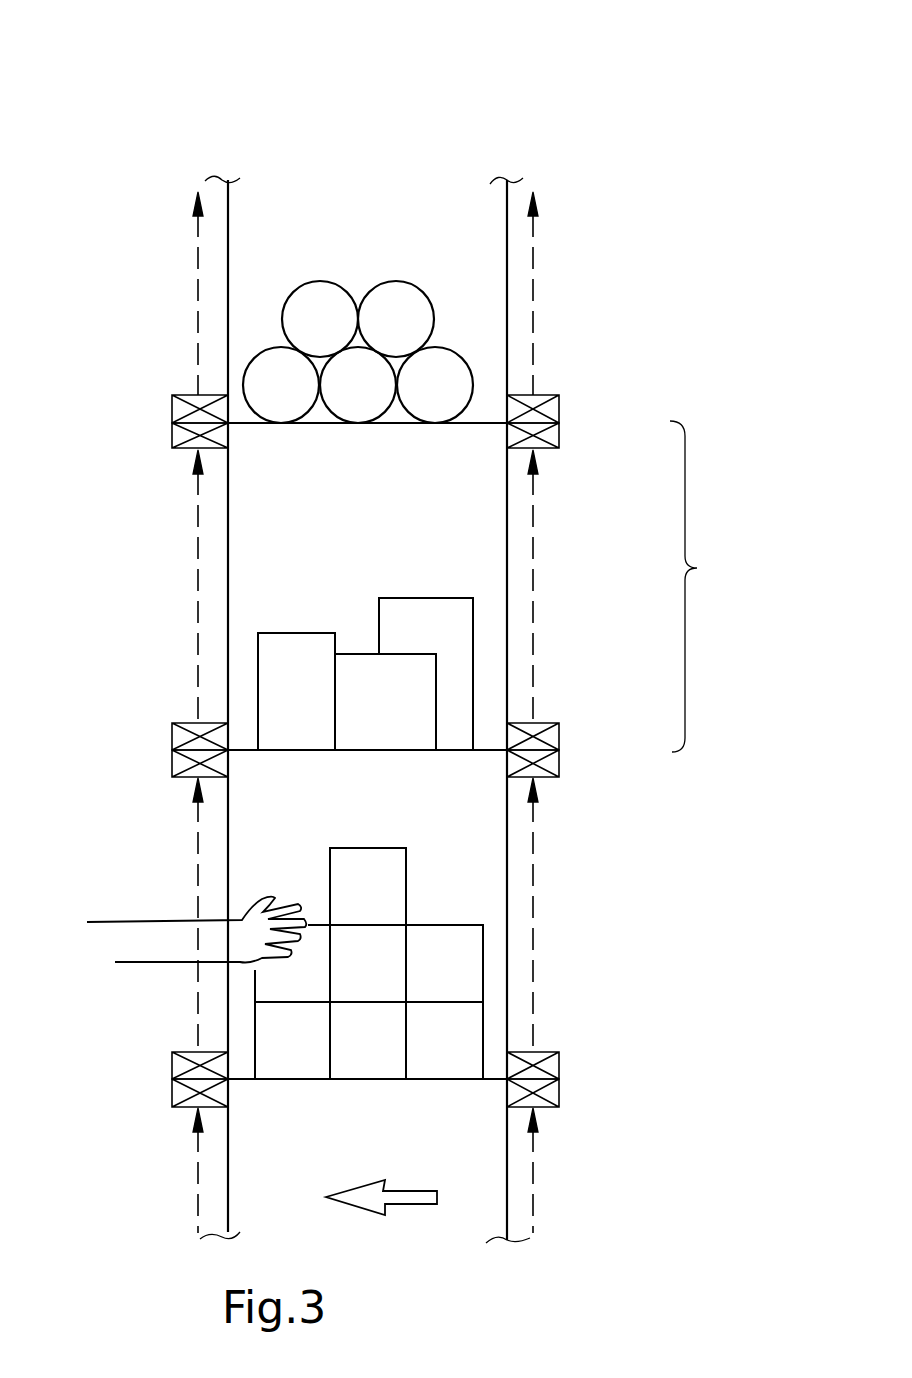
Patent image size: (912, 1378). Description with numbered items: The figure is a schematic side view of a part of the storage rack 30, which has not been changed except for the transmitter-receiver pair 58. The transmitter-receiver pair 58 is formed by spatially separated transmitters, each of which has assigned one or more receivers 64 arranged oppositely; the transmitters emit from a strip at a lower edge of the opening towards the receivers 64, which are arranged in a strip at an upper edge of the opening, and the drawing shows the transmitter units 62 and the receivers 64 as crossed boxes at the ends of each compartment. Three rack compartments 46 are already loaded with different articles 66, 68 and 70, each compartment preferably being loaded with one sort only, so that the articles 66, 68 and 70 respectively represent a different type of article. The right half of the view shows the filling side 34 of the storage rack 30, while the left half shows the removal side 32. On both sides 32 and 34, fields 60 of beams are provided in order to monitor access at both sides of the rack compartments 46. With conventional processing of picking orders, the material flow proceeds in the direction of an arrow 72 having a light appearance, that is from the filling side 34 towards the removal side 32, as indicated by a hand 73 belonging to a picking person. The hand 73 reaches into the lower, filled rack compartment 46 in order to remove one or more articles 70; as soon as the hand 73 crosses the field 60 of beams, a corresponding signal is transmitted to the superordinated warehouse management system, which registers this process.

The storage rack 30 is at (190, 137).
The removal side 32 is at (168, 598).
The filling side 34 is at (693, 280).
The rack compartment 46 is at (471, 213).
The transmitter-receiver pair 58 is at (701, 586).
The field of beams 60 is at (198, 272).
The drive unit 62 is at (172, 408).
The receiver 64 is at (172, 437).
The article 66 is at (273, 360).
The article 68 is at (296, 633).
The article 70 is at (327, 878).
The arrow 72 is at (407, 1197).
The hand 73 is at (121, 935).